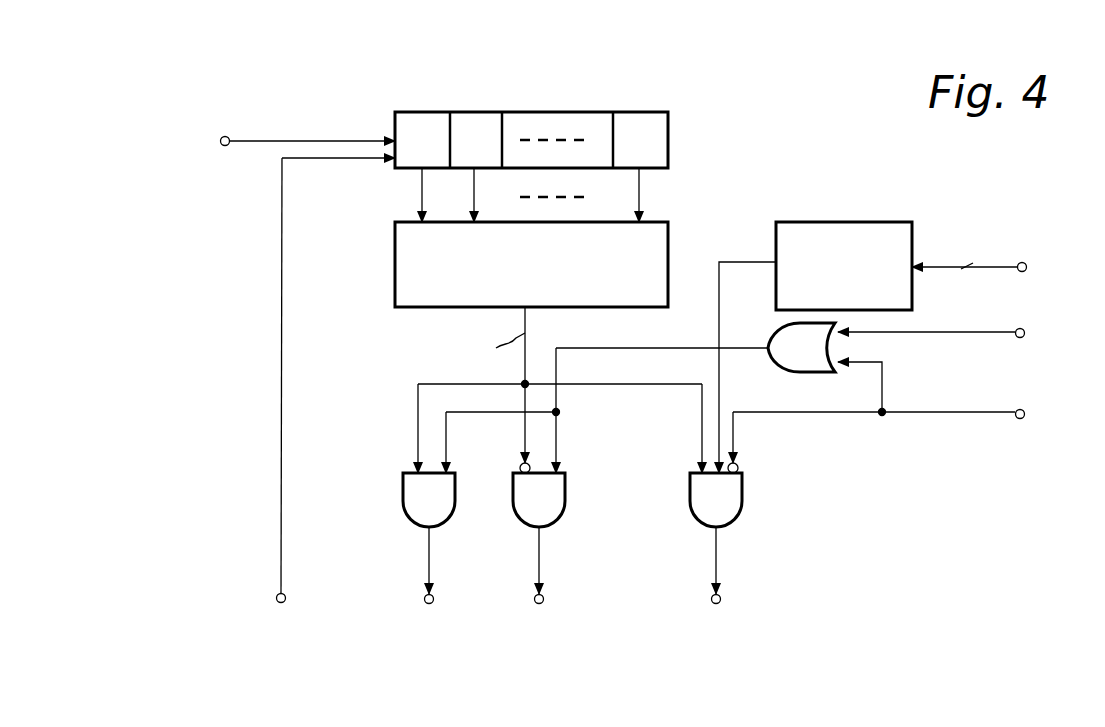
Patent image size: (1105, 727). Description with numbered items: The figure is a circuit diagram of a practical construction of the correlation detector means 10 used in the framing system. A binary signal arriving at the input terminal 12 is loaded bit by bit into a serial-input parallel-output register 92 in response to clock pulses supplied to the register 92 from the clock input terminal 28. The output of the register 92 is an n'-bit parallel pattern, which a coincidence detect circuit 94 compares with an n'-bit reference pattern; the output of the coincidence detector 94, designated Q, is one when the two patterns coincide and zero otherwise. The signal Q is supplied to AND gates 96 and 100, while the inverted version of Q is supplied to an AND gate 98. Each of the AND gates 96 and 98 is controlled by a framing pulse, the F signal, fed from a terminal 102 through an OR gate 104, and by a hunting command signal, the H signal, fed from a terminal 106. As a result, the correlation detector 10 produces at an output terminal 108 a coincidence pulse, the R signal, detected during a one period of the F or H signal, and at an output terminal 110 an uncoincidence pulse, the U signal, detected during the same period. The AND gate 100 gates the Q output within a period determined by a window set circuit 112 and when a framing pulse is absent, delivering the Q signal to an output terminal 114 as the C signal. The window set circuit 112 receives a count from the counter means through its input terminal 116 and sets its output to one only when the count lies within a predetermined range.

The correlation detector means 10 is at (635, 360).
The input terminal 12 is at (222, 146).
The clock input terminal 28 is at (281, 603).
The serial-input parallel-output register 92 is at (648, 112).
The coincidence detect circuit 94 is at (650, 222).
The AND gate 96 is at (404, 521).
The AND gate 98 is at (514, 516).
The AND gate 100 is at (691, 514).
The terminal 102 is at (1022, 408).
The OR gate 104 is at (816, 394).
The terminal 106 is at (1022, 328).
The output terminal 108 is at (429, 604).
The output terminal 110 is at (539, 604).
The window set circuit 112 is at (860, 222).
The output terminal 114 is at (716, 604).
The input terminal (W) 116 is at (1024, 262).